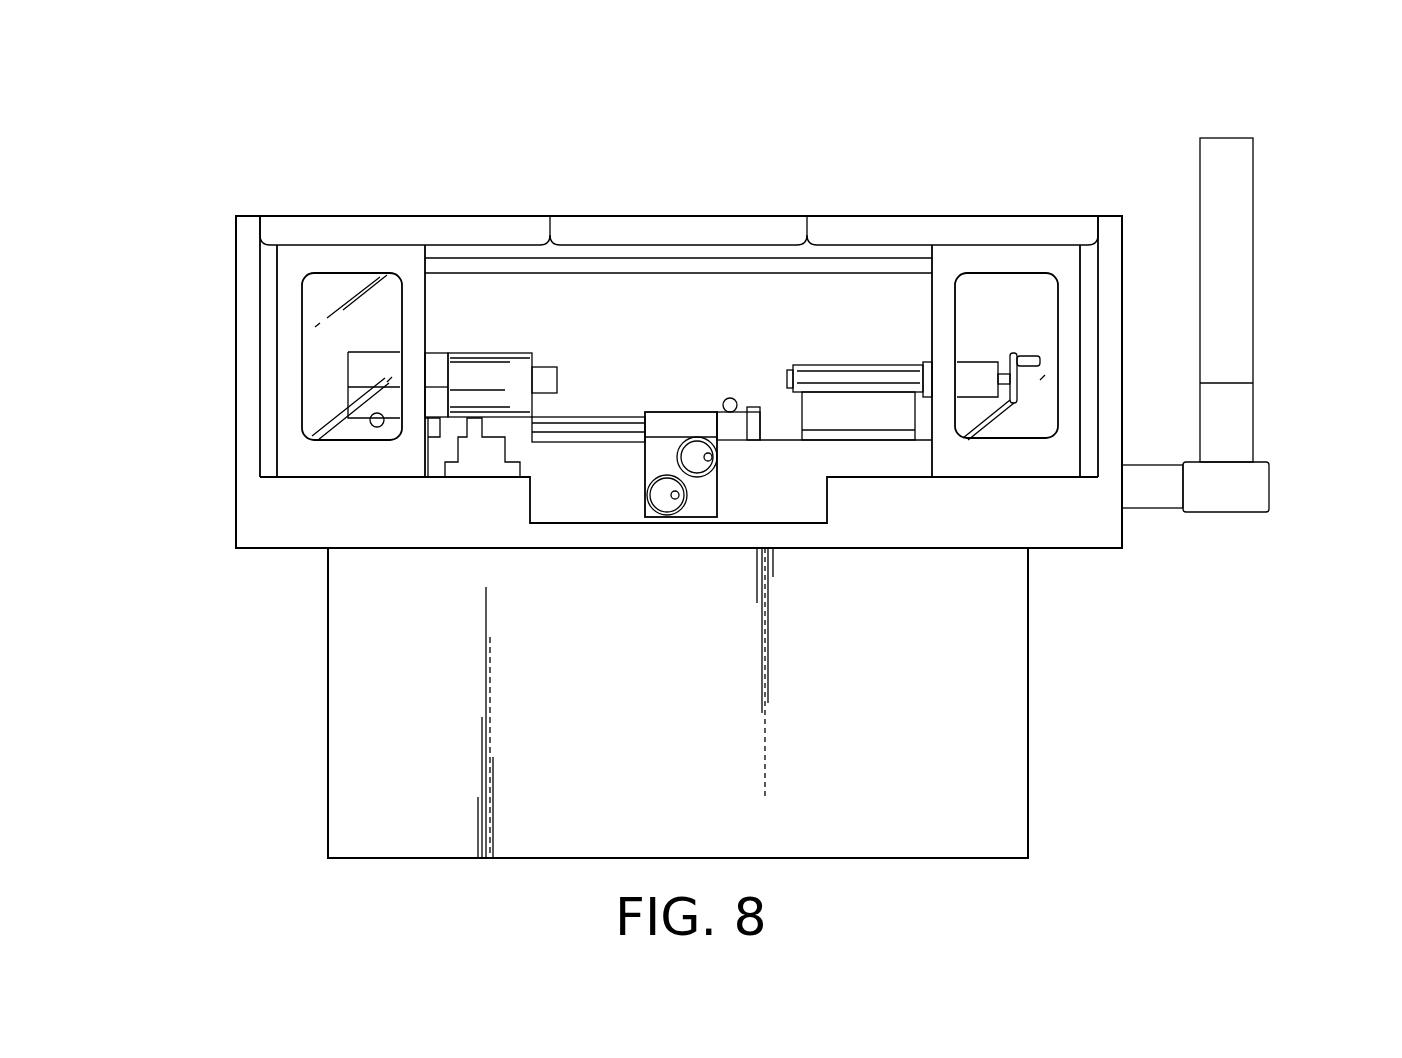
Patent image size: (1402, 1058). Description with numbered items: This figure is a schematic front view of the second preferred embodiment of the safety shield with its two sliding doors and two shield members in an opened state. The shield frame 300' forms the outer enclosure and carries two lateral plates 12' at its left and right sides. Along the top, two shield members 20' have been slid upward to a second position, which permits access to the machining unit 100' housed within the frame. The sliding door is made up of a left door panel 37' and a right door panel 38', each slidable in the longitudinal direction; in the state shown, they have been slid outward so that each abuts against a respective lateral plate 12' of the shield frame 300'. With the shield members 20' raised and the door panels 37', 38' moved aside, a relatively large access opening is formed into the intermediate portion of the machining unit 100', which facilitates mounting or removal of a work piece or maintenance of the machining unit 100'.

The shield frame 300' is at (752, 467).
The shield member 20' is at (679, 170).
The lateral plate 12' is at (729, 346).
The left door panel 37' is at (281, 361).
The right door panel 38' is at (1144, 361).
The machining unit 100' is at (891, 504).